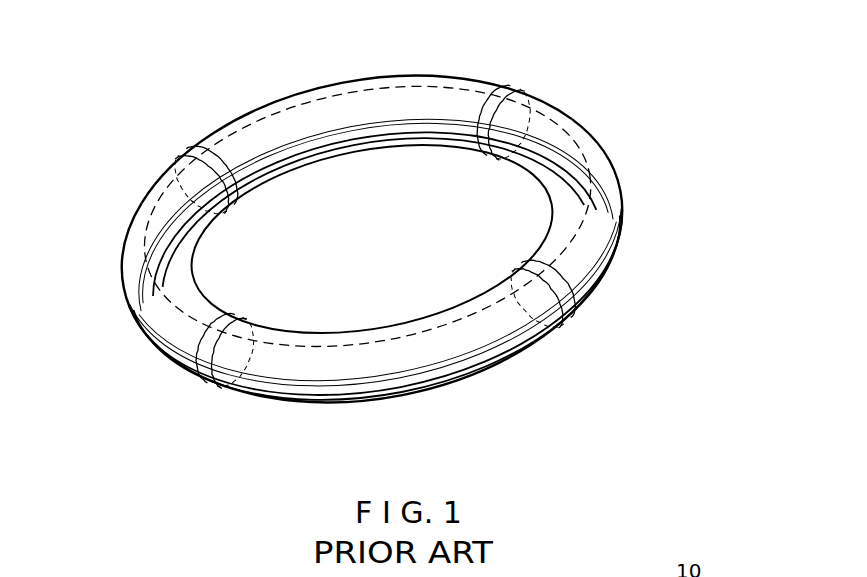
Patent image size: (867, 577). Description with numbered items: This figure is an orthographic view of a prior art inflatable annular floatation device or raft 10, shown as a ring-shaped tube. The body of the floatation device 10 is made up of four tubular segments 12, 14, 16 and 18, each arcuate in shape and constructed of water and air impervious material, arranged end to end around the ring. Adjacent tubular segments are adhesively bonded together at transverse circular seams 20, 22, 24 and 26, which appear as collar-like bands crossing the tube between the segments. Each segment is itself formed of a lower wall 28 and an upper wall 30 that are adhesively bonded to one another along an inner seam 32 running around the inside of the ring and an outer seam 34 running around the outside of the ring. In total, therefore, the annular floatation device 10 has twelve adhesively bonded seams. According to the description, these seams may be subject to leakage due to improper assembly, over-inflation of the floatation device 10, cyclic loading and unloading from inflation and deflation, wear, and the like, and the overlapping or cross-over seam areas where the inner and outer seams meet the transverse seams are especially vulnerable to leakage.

The inflatable annular floatation device 10 is at (381, 238).
The tubular segment 12 is at (298, 85).
The tubular segment 14 is at (118, 316).
The tubular segment 16 is at (400, 410).
The tubular segment 18 is at (645, 222).
The transverse circular seam 20 is at (486, 118).
The transverse circular seam 22 is at (195, 176).
The transverse circular seam 24 is at (210, 346).
The transverse circular seam 26 is at (560, 282).
The lower wall 28 is at (523, 349).
The upper wall 30 is at (445, 348).
The inner seam 32 is at (450, 143).
The outer seam 34 is at (256, 392).